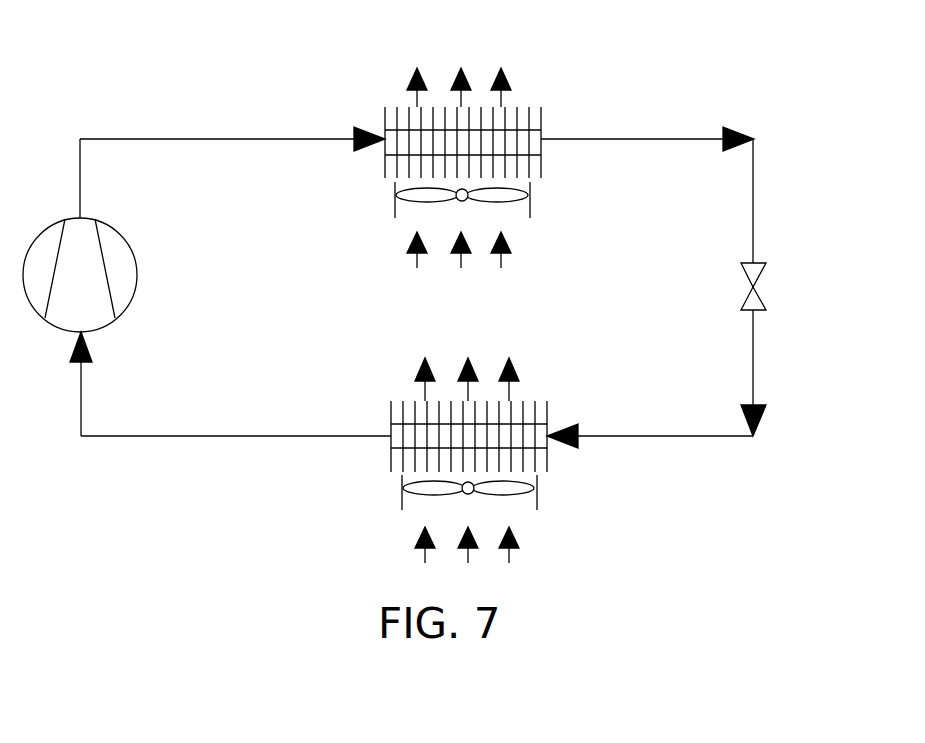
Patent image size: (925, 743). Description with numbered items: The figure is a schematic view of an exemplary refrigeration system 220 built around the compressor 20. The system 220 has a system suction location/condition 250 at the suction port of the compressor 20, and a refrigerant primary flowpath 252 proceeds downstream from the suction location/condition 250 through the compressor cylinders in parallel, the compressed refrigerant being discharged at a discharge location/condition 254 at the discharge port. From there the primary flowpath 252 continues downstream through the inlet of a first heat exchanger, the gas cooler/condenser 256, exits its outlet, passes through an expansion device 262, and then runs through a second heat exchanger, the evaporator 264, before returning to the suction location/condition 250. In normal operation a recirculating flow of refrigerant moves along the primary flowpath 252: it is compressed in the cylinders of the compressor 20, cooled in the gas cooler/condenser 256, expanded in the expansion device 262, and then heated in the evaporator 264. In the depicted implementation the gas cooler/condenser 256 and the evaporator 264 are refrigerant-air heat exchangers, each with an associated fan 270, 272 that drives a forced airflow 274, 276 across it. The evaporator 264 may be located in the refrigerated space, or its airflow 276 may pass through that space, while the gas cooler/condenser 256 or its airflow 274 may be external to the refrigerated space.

The compressor 20 is at (95, 292).
The refrigeration system 220 is at (644, 99).
The suction location/condition 250 is at (84, 332).
The refrigerant primary flowpath 252 is at (235, 437).
The discharge location/condition 254 is at (79, 218).
The first heat exchanger (gas cooler/condenser) 256 is at (554, 166).
The expansion device 262 is at (772, 284).
The second heat exchanger (evaporator) 264 is at (564, 469).
The fan 270 is at (516, 211).
The fan 272 is at (515, 504).
The airflow 274 is at (502, 107).
The airflow 276 is at (509, 399).